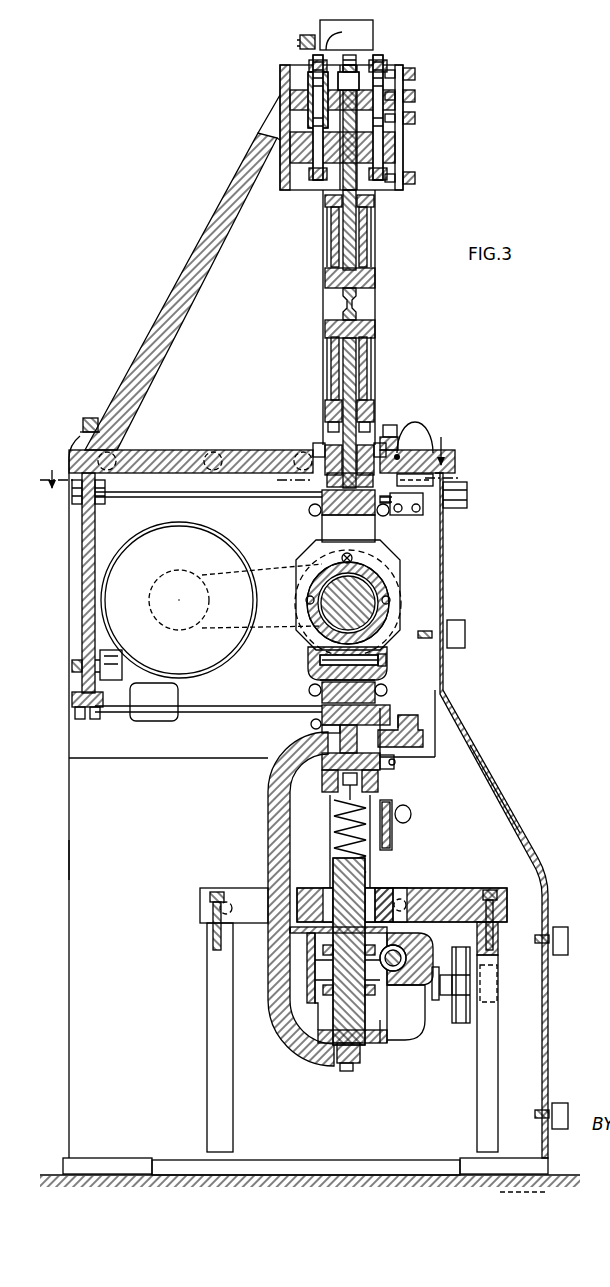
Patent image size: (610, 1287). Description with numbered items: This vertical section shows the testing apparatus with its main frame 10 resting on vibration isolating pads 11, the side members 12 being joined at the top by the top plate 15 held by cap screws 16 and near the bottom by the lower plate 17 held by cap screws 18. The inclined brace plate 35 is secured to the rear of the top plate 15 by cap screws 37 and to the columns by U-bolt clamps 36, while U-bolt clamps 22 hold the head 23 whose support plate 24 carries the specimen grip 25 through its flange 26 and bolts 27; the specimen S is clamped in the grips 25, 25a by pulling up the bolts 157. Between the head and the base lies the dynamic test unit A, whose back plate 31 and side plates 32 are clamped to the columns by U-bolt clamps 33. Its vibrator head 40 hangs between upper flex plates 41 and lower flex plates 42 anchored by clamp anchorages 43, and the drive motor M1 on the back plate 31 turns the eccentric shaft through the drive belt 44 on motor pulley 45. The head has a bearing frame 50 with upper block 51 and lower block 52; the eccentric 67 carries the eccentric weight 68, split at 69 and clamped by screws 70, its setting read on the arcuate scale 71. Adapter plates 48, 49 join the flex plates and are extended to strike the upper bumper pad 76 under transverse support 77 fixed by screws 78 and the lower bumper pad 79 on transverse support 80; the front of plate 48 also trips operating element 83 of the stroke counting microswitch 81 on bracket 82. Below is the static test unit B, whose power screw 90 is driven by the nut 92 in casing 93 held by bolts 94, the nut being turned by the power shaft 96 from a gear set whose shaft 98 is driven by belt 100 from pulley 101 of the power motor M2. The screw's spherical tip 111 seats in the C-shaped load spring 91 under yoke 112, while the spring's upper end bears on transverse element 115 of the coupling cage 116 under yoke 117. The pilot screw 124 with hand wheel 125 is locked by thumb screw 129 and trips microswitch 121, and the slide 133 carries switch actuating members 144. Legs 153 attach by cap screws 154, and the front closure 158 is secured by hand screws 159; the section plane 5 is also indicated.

The main frame 10 is at (66, 822).
The side members 12 is at (68, 855).
The cap screws 16 is at (212, 450).
The top plate 15 is at (452, 453).
The inclined brace plate 35 is at (185, 263).
The cap screws 37 is at (90, 413).
The back plate 31 is at (80, 593).
The clamp anchorages 43 is at (72, 500).
The upper flex plates 41 is at (240, 498).
The lower flex plates 42 is at (238, 712).
The drive motor M1 is at (186, 553).
The motor pulley 45 is at (157, 622).
The drive belt 44 is at (266, 628).
The flange 26 is at (300, 93).
The bolts 27 is at (380, 53).
The U-bolt clamps 36 is at (324, 36).
The head 23 is at (404, 138).
The U-bolt clamps 22 is at (416, 118).
The support plate 24 is at (404, 158).
The bolts 157 is at (368, 223).
The specimen grip 25 is at (358, 247).
The specimen S is at (342, 308).
The specimen grip 25a is at (358, 373).
The screws 78 is at (388, 424).
The transverse support 77 is at (402, 436).
The upper bumper pad 76 is at (410, 423).
The section line 5- 5 is at (250, 451).
The adapter plate 48 is at (444, 476).
The bracket 82 is at (457, 484).
The stroke counting microswitch 81 is at (424, 512).
The operating element 83 is at (387, 505).
The upper block 51 is at (373, 537).
The U-bolt clamps 33 is at (315, 517).
The bearing frame 50 is at (298, 556).
The eccentric 67 is at (368, 636).
The arcuate scale 71 is at (357, 583).
The eccentric weight 68 is at (380, 641).
The screws 70 is at (387, 660).
The radial split 69 is at (352, 683).
The lower block 52 is at (388, 692).
The side plates 32 is at (427, 706).
The adapter plate 49 is at (392, 712).
The lower bumper pad 79 is at (403, 716).
The transverse support 80 is at (425, 737).
The yoke 117 is at (312, 724).
The coupling cage 116 is at (322, 740).
The vibrator head 40 is at (404, 597).
The front closure 158 is at (497, 788).
The dynamic test unit A is at (420, 585).
The static test unit B is at (457, 870).
The hand screws 159 is at (466, 635).
The C-shaped load spring 91 is at (268, 800).
The transverse element 115 is at (327, 767).
The hand adjusting flange or wheel 125 is at (333, 793).
The microswitch 121 is at (377, 780).
The switch actuating members 144 is at (396, 763).
The slide 133 is at (392, 838).
The power screw 90 is at (367, 864).
The pilot screw 124 is at (392, 843).
The thumb screw 129 is at (411, 810).
The lower plate 17 is at (507, 902).
The bolts 94 is at (432, 883).
The cap screws 154 is at (215, 890).
The cap screws 18 is at (232, 903).
The legs 153 is at (215, 1097).
The vibration isolating pads 11 is at (62, 1160).
The nut 92 is at (313, 975).
The casing 93 is at (307, 993).
The power shaft 96 is at (400, 1040).
The shaft 98 is at (440, 1000).
The belt 100 is at (462, 1020).
The pulley 101 is at (452, 1040).
The ball or spherical tip 111 is at (333, 1065).
The yoke 112 is at (348, 1066).
The power motor M2 is at (372, 1060).